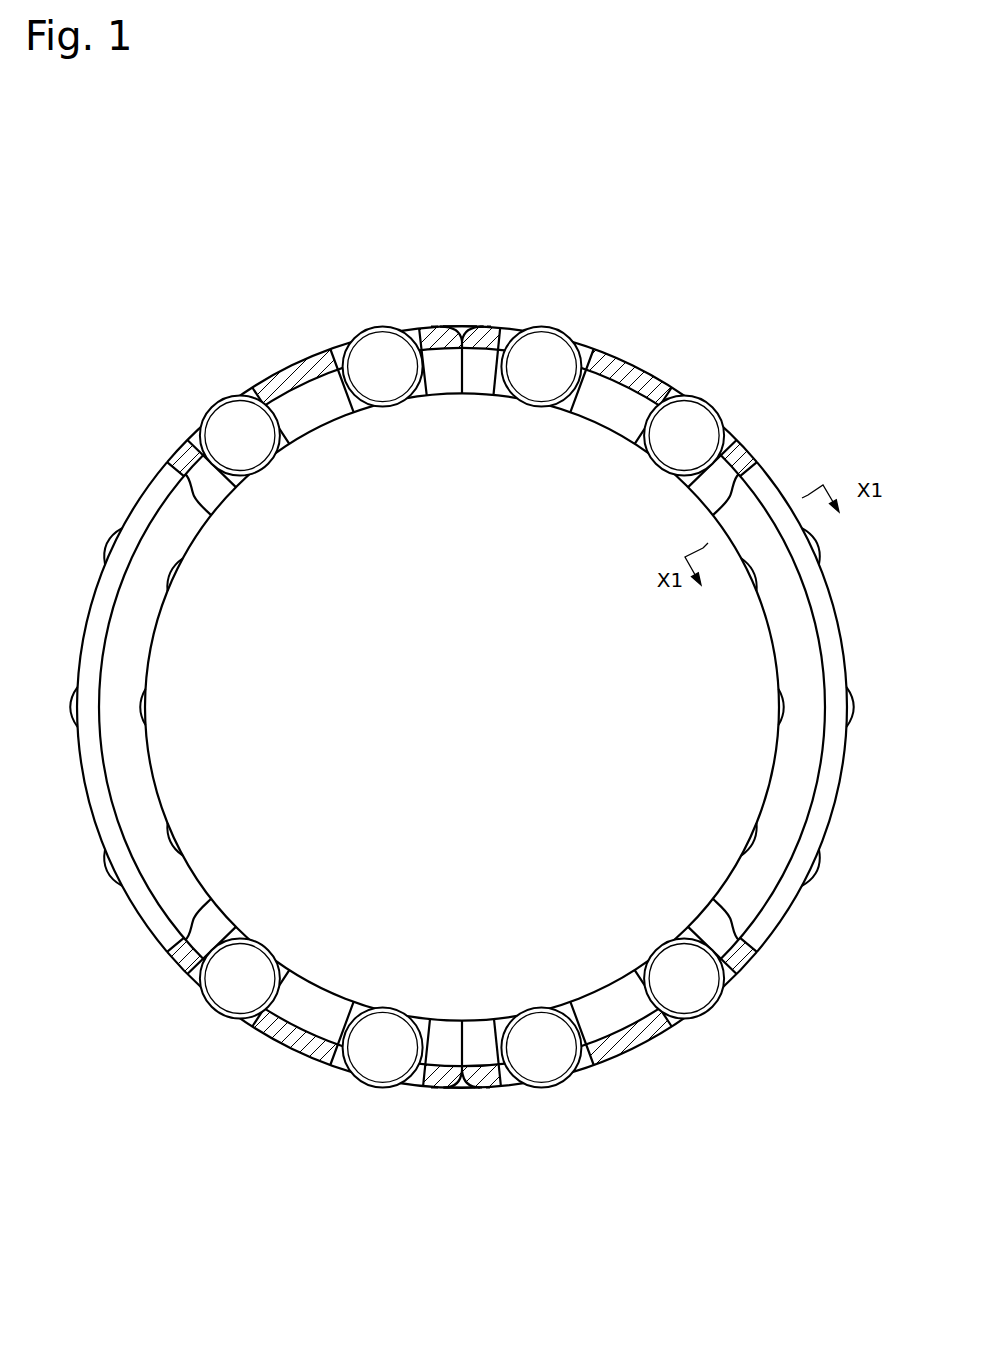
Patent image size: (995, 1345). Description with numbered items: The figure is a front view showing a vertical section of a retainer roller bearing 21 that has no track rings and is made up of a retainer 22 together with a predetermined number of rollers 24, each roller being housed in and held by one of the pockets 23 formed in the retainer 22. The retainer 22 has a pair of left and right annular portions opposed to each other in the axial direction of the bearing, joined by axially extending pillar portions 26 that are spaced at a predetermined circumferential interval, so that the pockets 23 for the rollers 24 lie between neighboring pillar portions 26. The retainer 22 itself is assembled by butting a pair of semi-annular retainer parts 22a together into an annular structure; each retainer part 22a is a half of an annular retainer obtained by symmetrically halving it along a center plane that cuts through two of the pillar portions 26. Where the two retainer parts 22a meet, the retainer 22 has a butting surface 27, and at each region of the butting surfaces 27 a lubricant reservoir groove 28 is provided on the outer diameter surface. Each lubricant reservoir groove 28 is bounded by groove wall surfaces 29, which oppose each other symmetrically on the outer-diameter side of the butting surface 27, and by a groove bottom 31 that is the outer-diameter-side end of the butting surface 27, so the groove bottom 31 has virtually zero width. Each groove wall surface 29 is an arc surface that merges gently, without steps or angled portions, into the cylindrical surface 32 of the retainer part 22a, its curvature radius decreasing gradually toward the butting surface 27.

The retainer roller bearing 21 is at (637, 341).
The retainer 22 is at (833, 588).
The retainer part 22a is at (140, 905).
The pocket 23 is at (362, 397).
The roller 24 is at (688, 410).
The pillar portion 26 is at (433, 324).
The butting surface 27 is at (460, 375).
The lubricant reservoir groove 28 is at (462, 327).
The groove wall surface 29 is at (485, 324).
The groove bottom 31 is at (463, 337).
The cylindrical surface 32 is at (777, 479).